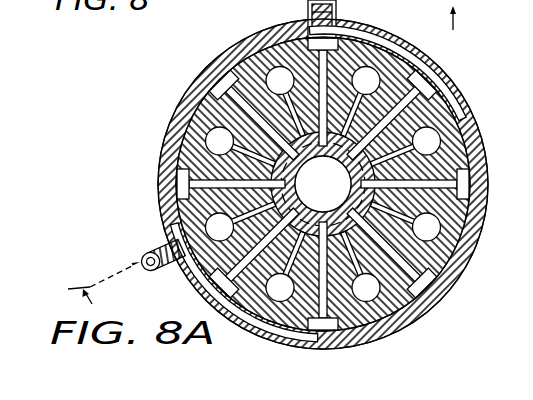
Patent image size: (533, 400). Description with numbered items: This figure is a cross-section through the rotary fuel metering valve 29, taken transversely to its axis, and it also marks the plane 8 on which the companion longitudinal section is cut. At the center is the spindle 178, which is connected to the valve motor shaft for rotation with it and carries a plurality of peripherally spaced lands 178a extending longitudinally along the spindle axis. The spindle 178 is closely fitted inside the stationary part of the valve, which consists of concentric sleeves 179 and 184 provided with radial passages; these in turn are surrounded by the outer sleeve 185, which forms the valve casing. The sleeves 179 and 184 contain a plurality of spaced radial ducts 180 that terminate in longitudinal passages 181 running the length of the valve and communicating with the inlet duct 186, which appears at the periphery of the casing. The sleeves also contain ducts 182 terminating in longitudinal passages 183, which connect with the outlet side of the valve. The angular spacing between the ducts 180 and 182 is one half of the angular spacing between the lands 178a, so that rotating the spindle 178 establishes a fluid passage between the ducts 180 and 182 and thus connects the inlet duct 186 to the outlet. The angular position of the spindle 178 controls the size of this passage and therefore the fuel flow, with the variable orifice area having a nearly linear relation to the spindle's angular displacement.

The rotary fuel metering valve 29 is at (194, 72).
The spindle 178 is at (302, 188).
The lands 178a is at (322, 157).
The sleeve 179 is at (394, 130).
The radial ducts 180 is at (413, 153).
The longitudinal passages 181 is at (441, 142).
The ducts 182 is at (309, 32).
The longitudinal passages 183 is at (338, 32).
The sleeve 184 is at (453, 114).
The outer sleeve 185 is at (424, 53).
The inlet duct 186 is at (169, 276).
The section plane 8— 8 is at (104, 283).